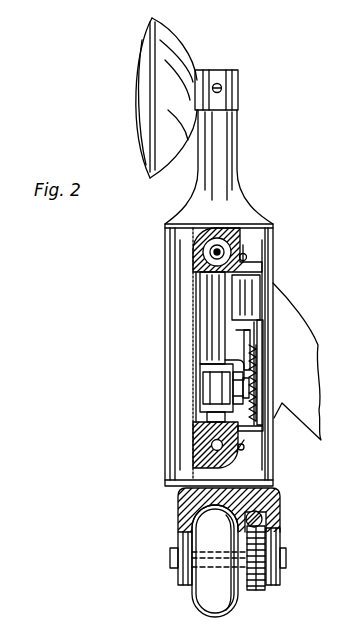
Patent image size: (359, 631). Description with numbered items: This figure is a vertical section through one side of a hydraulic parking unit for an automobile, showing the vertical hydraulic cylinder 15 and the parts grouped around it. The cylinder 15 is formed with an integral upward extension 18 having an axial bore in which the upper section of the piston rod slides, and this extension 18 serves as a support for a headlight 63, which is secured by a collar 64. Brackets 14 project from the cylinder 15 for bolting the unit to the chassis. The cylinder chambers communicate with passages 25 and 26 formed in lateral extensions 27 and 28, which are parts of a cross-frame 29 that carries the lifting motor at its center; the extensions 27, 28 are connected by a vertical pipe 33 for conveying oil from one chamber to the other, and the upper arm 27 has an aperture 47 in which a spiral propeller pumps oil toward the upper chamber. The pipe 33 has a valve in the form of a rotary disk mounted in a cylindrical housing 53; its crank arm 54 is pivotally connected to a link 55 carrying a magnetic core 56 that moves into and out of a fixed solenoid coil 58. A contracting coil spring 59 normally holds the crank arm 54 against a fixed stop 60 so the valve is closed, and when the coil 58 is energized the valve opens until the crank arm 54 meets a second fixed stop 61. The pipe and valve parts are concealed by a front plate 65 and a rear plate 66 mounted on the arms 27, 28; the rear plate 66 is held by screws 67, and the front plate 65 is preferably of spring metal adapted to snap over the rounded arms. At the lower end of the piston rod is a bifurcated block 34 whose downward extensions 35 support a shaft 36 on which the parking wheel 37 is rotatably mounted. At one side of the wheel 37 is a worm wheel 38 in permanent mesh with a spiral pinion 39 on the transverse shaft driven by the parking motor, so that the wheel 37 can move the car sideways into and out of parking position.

The bracket 14 is at (310, 368).
The hydraulic cylinder 15 is at (170, 296).
The cylinder extension 18 is at (226, 136).
The passage 25 is at (238, 230).
The passage 26 is at (211, 446).
The lateral extension 27 is at (200, 262).
The lateral extension 28 is at (196, 432).
The cross-frame 29 is at (358, 452).
The vertical pipe 33 is at (207, 315).
The bifurcated block 34 is at (272, 500).
The downward extension 35 is at (178, 582).
The shaft 36 is at (286, 558).
The parking wheel 37 is at (207, 602).
The worm wheel 38 is at (253, 592).
The spiral pinion 39 is at (262, 518).
The aperture 47 is at (205, 250).
The cylindrical housing 53 is at (212, 378).
The crank arm 54 is at (257, 393).
The link 55 is at (250, 357).
The magnetic core 56 is at (264, 323).
The solenoid coil 58 is at (253, 293).
The contracting coil spring 59 is at (250, 384).
The fixed stop 60 is at (207, 400).
The second fixed stop 61 is at (224, 352).
The headlight 63 is at (170, 45).
The collar 64 is at (222, 88).
The front plate 65 is at (194, 280).
The rear plate 66 is at (262, 338).
The screw 67 is at (250, 253).